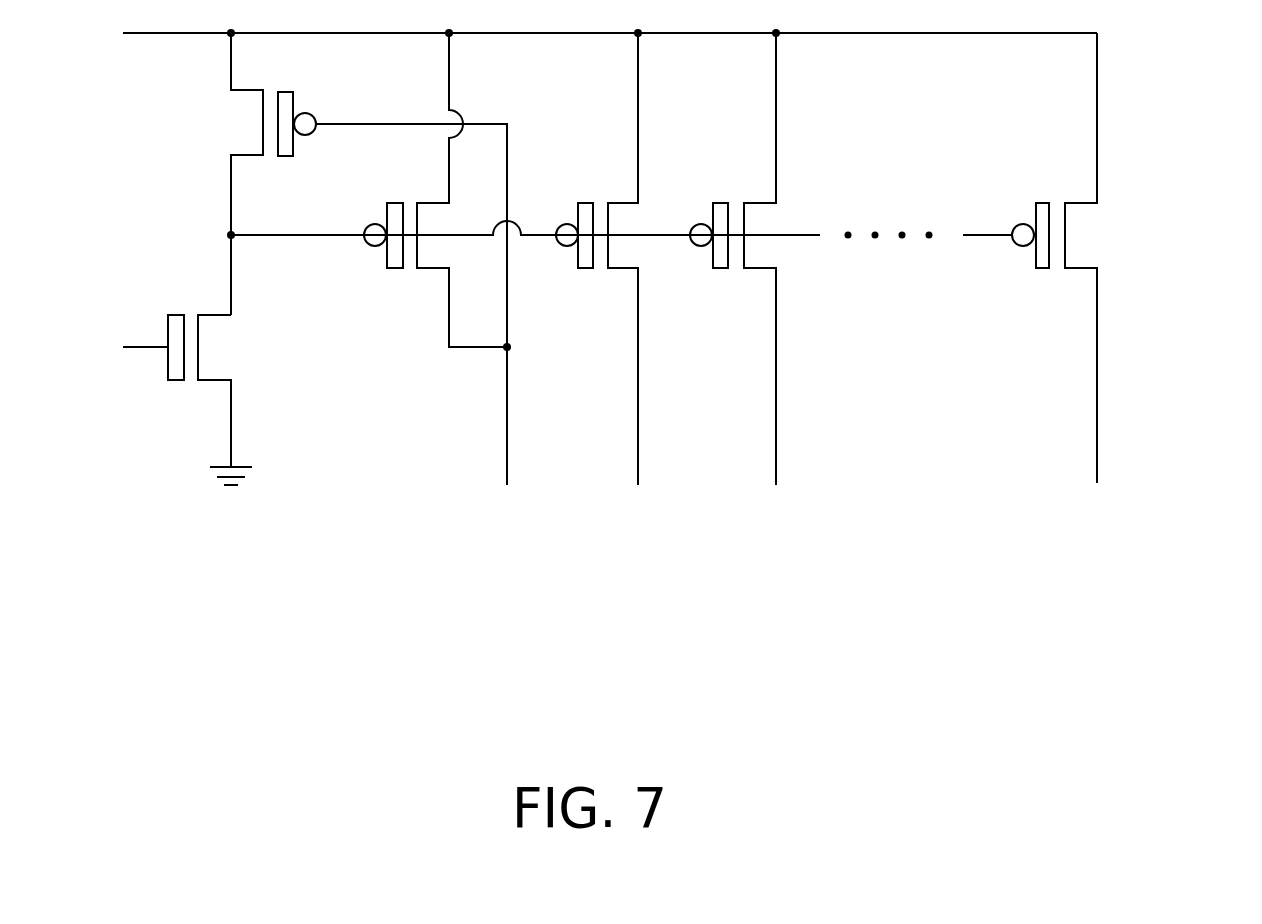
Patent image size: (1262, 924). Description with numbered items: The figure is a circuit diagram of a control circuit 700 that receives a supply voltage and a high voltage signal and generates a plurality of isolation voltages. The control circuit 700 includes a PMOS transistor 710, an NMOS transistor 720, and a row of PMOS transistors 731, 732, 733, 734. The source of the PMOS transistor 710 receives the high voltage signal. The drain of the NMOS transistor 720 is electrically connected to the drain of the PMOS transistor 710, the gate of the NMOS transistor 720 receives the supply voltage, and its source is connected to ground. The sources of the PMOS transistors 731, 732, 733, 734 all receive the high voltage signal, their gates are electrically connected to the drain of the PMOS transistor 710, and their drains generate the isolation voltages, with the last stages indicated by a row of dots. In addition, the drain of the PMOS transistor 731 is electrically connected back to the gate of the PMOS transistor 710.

The control circuit 700 is at (659, 330).
The PMOS transistor 710 is at (273, 174).
The NMOS transistor 720 is at (187, 400).
The PMOS transistor 731 is at (435, 190).
The PMOS transistor 732 is at (597, 259).
The PMOS transistor 733 is at (733, 259).
The PMOS transistor 734 is at (1054, 258).